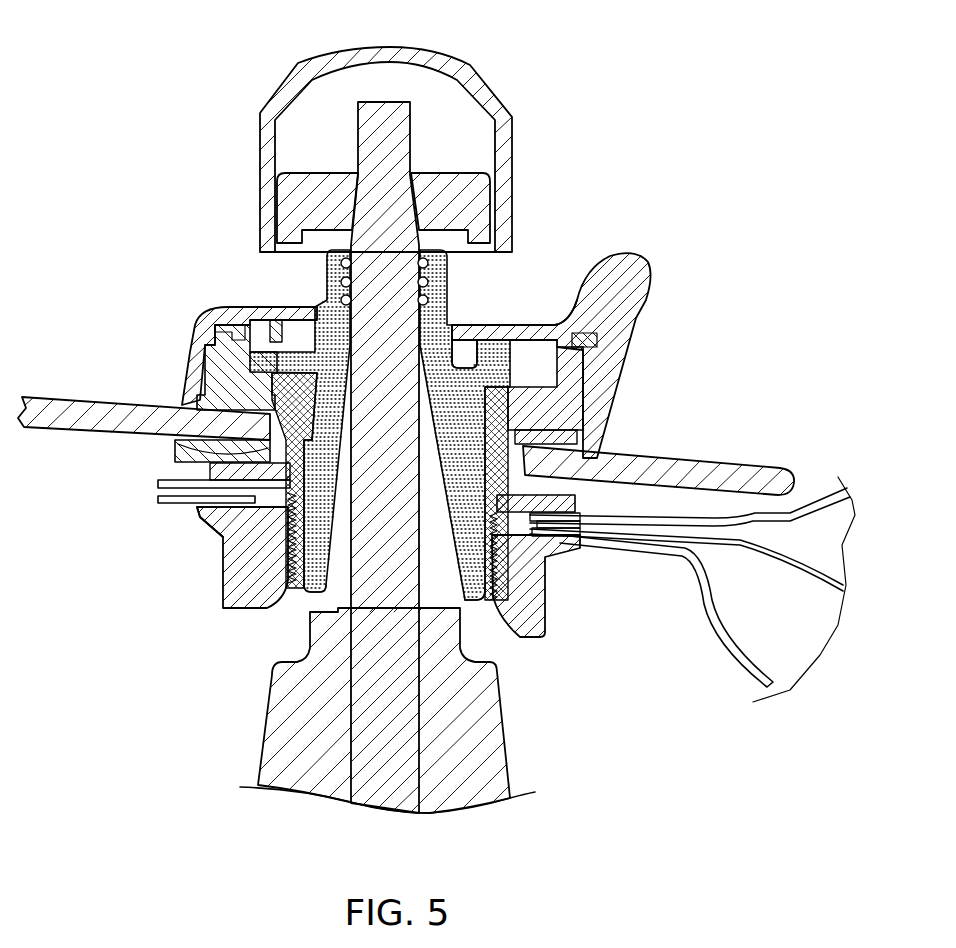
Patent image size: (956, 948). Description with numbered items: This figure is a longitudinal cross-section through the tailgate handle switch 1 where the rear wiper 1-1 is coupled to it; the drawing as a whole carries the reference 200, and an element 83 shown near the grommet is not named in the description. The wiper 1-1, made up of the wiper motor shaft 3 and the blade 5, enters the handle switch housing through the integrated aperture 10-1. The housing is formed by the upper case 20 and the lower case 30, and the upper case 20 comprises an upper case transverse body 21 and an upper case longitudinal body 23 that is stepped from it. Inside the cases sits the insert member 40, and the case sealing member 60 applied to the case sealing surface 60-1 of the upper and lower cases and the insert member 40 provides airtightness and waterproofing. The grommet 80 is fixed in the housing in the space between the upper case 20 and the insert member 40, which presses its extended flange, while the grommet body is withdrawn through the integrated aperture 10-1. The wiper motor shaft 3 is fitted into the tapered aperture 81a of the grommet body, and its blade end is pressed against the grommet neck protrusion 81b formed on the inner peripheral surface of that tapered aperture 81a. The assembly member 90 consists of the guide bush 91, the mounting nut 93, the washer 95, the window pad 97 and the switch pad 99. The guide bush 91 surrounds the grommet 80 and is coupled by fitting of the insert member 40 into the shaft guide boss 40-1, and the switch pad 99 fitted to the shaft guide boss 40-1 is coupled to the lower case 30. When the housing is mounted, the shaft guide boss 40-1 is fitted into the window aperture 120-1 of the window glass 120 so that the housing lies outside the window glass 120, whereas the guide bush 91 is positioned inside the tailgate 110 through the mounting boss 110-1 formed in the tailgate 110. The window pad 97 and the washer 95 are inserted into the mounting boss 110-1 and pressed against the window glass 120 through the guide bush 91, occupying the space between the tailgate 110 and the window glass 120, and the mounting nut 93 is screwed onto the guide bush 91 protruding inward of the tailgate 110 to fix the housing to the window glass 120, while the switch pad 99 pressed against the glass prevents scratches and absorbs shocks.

The faucet assembly 200 is at (64, 36).
The tailgate handle switch 1 is at (748, 314).
The wiper 1-1 is at (215, 762).
The wiper motor shaft 3 is at (308, 620).
The blade 5 is at (285, 92).
The integrated aperture 10-1 is at (460, 262).
The upper case 20 is at (690, 170).
The upper case transverse body 21 is at (548, 345).
The upper case longitudinal body 23 is at (602, 268).
The lower case 30 is at (205, 338).
The insert member 40 is at (200, 372).
The shaft guide boss 40-1 is at (200, 476).
The case sealing member 60 is at (618, 340).
The case sealing surface 60-1 is at (605, 310).
The grommet 80 is at (322, 285).
The tapered aperture 81a is at (487, 603).
The grommet neck protrusion 81b is at (343, 262).
The valve stem 83 is at (490, 362).
The assembly member 90 is at (617, 762).
The guide bush 91 is at (607, 542).
The mounting nut 93 is at (560, 512).
The washer 95 is at (575, 548).
The window pad 97 is at (523, 450).
The switch pad 99 is at (700, 540).
The tailgate 110 is at (180, 498).
The mounting boss 110-1 is at (222, 540).
The window glass 120 is at (68, 397).
The window aperture 120-1 is at (176, 440).